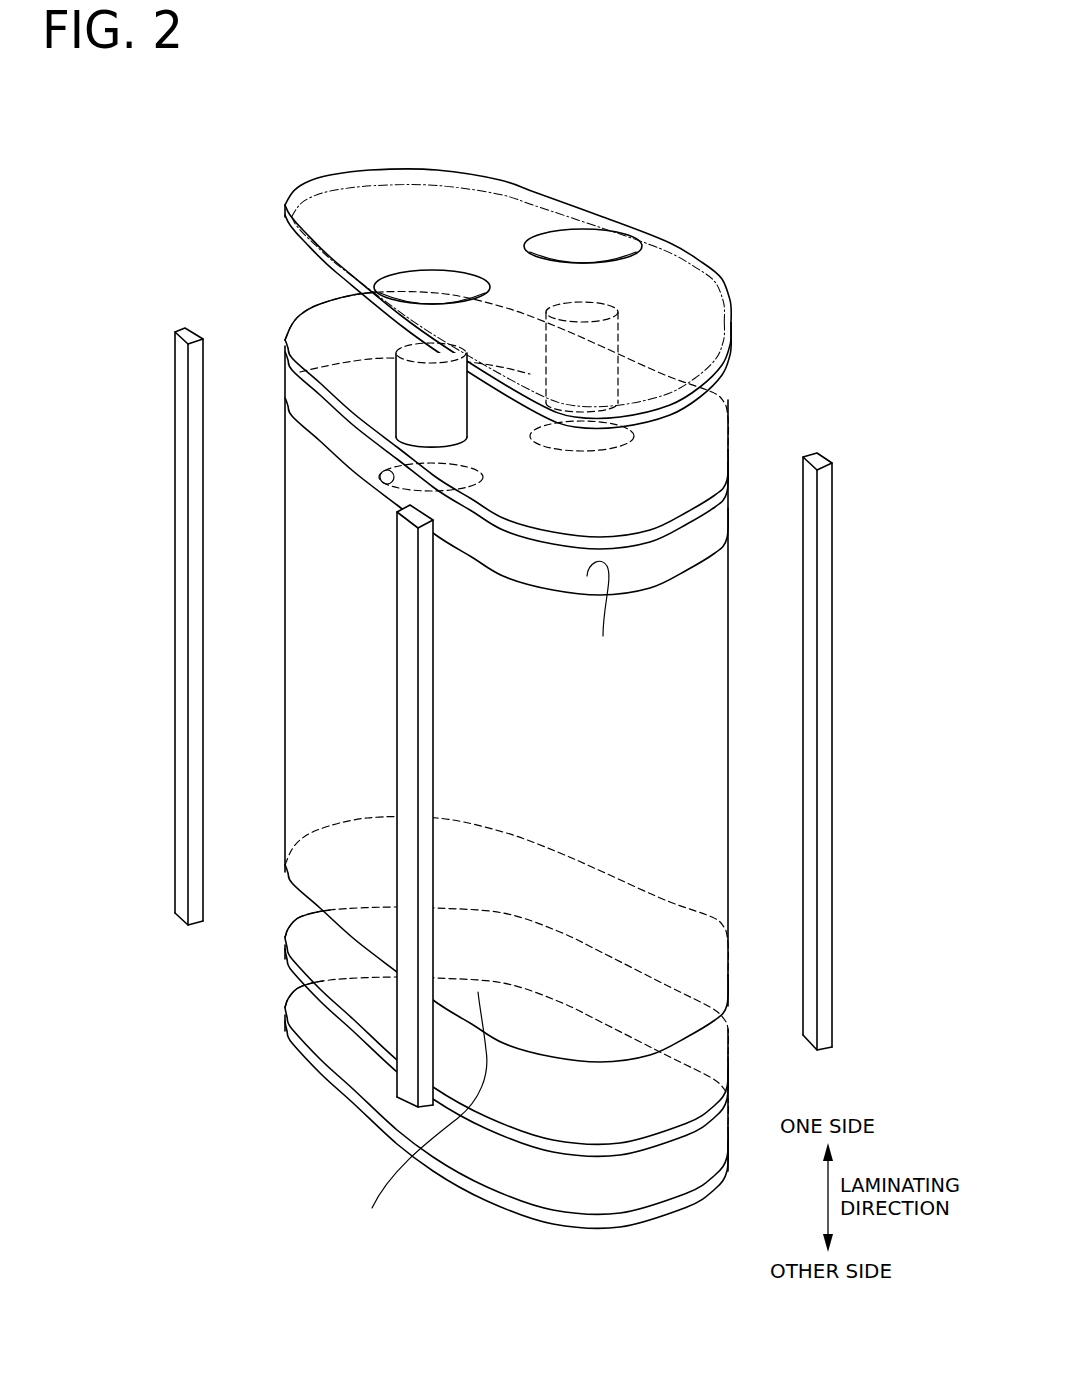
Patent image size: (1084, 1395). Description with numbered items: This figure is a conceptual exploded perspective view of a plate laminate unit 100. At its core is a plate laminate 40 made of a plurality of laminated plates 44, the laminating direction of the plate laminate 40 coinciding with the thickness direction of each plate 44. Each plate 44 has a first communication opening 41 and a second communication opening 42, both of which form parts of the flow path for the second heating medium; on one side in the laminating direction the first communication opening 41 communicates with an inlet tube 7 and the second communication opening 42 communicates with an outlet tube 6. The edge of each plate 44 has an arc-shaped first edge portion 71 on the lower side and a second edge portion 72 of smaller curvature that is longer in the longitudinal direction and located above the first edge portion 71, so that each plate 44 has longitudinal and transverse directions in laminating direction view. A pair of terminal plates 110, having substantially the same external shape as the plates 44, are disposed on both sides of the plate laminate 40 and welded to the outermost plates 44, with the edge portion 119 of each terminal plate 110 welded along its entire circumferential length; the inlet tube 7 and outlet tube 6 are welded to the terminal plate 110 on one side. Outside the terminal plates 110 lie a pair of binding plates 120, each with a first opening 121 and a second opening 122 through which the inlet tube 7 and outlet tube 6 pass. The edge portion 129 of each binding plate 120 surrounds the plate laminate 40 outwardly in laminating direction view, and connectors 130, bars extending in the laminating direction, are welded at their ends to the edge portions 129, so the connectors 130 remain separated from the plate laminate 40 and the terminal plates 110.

The plate laminate unit 100 is at (541, 112).
The terminal plate 110 is at (660, 462).
The edge portion of terminal plate 119 is at (733, 440).
The binding plate 120 is at (667, 295).
The edge portion of binding plate 129 is at (403, 166).
The first opening 121 is at (447, 273).
The second opening 122 is at (573, 230).
The inlet tube 7 is at (397, 413).
The first communication opening 41 is at (386, 470).
The second communication opening 42 is at (665, 400).
The outlet tube 6 is at (618, 347).
The plate 44 is at (485, 900).
The plate laminate 40 is at (338, 782).
The connector 130 is at (180, 663).
The first edge portion 71 is at (730, 530).
The second edge portion 72 is at (290, 474).